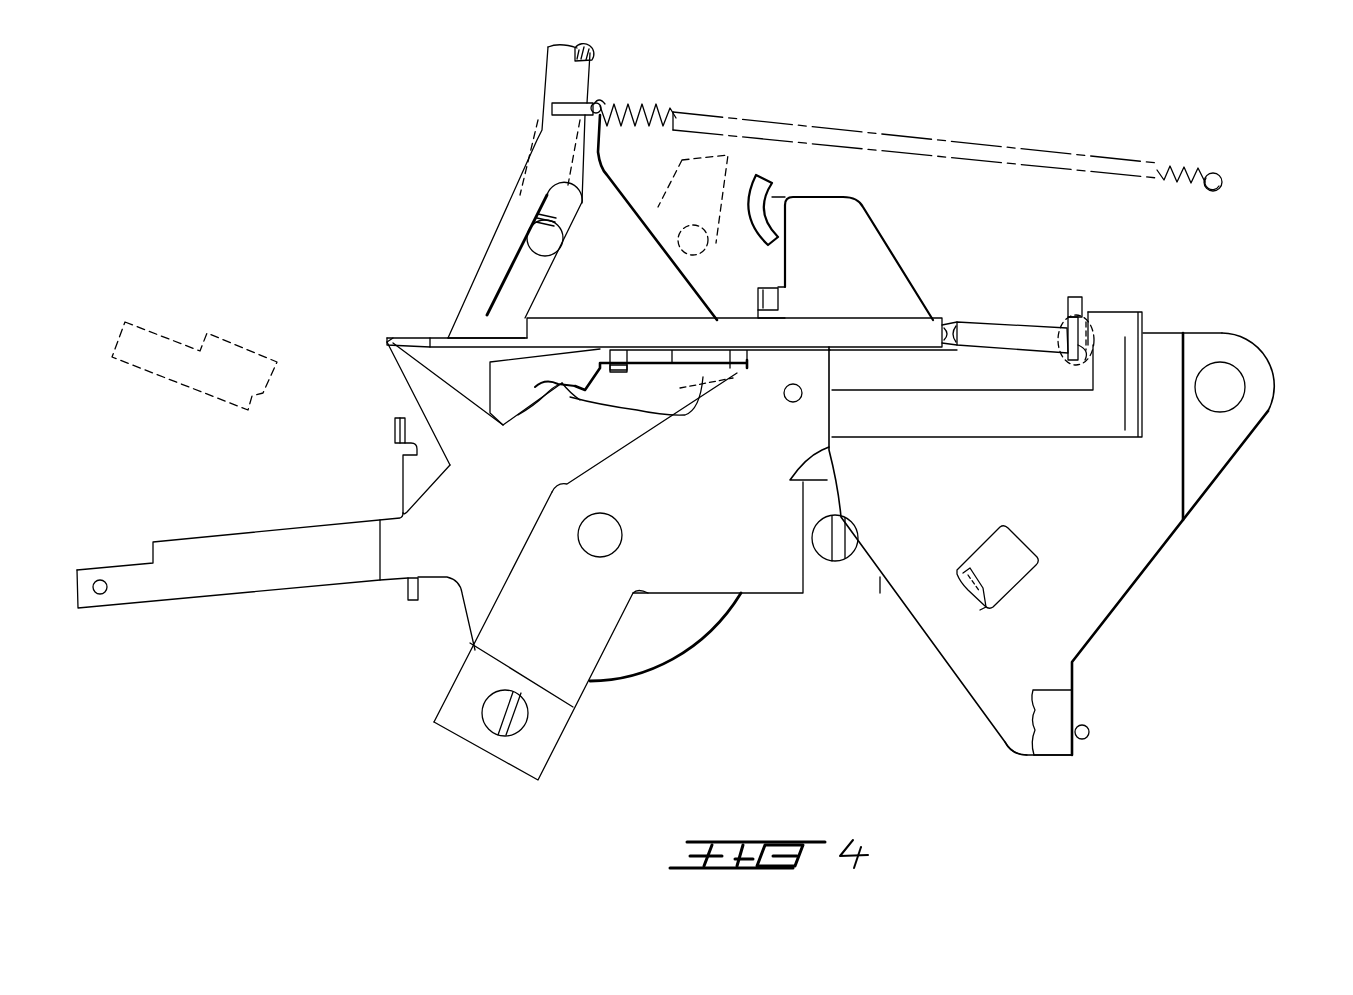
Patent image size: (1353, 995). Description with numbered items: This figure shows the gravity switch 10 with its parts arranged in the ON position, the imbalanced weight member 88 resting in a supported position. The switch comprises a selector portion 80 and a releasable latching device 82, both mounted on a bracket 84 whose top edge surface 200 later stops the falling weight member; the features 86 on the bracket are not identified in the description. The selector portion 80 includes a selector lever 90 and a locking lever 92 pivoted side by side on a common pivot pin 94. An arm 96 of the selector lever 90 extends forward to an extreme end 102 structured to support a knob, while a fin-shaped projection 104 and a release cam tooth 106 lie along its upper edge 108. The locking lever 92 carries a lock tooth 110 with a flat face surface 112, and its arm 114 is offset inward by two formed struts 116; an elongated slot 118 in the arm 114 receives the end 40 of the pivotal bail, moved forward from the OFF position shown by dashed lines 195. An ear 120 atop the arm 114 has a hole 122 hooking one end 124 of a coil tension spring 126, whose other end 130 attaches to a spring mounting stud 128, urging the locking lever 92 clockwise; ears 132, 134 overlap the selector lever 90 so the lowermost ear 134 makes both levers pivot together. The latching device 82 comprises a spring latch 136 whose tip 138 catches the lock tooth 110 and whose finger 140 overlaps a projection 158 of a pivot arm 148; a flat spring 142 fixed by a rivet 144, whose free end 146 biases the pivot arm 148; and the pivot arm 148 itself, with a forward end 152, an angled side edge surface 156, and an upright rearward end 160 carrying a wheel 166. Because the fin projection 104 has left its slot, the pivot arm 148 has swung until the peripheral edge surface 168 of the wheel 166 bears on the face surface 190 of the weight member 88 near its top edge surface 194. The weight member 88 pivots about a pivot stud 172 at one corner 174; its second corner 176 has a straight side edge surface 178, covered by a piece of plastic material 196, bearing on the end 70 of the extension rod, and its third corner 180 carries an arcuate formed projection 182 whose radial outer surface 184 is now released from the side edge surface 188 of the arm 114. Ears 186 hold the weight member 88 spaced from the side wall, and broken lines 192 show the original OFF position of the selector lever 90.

The gravity switch 10 is at (452, 286).
The end of pivotal bail 40 is at (560, 76).
The end of rod 70 is at (1092, 735).
The selector portion 80 is at (450, 597).
The releasable latching device 82 is at (740, 383).
The bracket 84 is at (686, 595).
The mounting hole 86 is at (830, 567).
The imbalanced weight member 88 is at (1127, 590).
The selector lever 90 is at (473, 587).
The locking lever 92 is at (400, 487).
The pivot pin 94 is at (600, 555).
The arm of selector lever 96 is at (253, 578).
The extreme end of arm 102 is at (118, 590).
The fin-shaped projection 104 is at (403, 367).
The release cam tooth 106 is at (527, 427).
The upper edge of selector lever 108 is at (638, 410).
The lock tooth 110 is at (545, 440).
The flat face surface 112 is at (553, 380).
The arm of locking lever 114 is at (507, 237).
The formed struts 116 is at (463, 392).
The elongated slot 118 is at (447, 337).
The ear 120 is at (578, 60).
The hole 122 is at (597, 97).
The one end of coil tension spring 124 is at (600, 103).
The coil tension spring 126 is at (717, 113).
The spring mounting stud 128 is at (1224, 173).
The other end of spring 130 is at (1207, 168).
The ear 132 is at (393, 432).
The lowermost ear 134 is at (407, 590).
The spring latch 136 is at (660, 347).
The tip of spring latch 138 is at (585, 372).
The finger 140 is at (622, 343).
The flat spring 142 is at (997, 423).
The rivet 144 is at (782, 363).
The free end of spring 146 is at (1118, 415).
The pivot arm 148 is at (865, 320).
The forward end of pivot arm 152 is at (488, 334).
The side edge surface 156 is at (447, 343).
The projection 158 is at (628, 370).
The rearward end of pivot arm 160 is at (1087, 357).
The wheel 166 is at (1080, 307).
The peripheral edge surface of wheel 168 is at (1077, 302).
The pivot stud 172 is at (1247, 380).
The corner 174 is at (1242, 423).
The second corner 176 is at (1012, 732).
The straight side edge surface 178 is at (1073, 700).
The third corner 180 is at (860, 235).
The formed projection 182 is at (772, 207).
The radial outer surface 184 is at (720, 243).
The ears 186 is at (757, 300).
The side edge surface of arm 188 is at (618, 180).
The face surface 190 is at (1200, 338).
The broken lines 192 is at (237, 322).
The top edge surface 194 is at (1143, 335).
The dashed lines 195 is at (693, 209).
The piece of plastic material 196 is at (1052, 742).
The top edge surface of bracket 200 is at (822, 452).